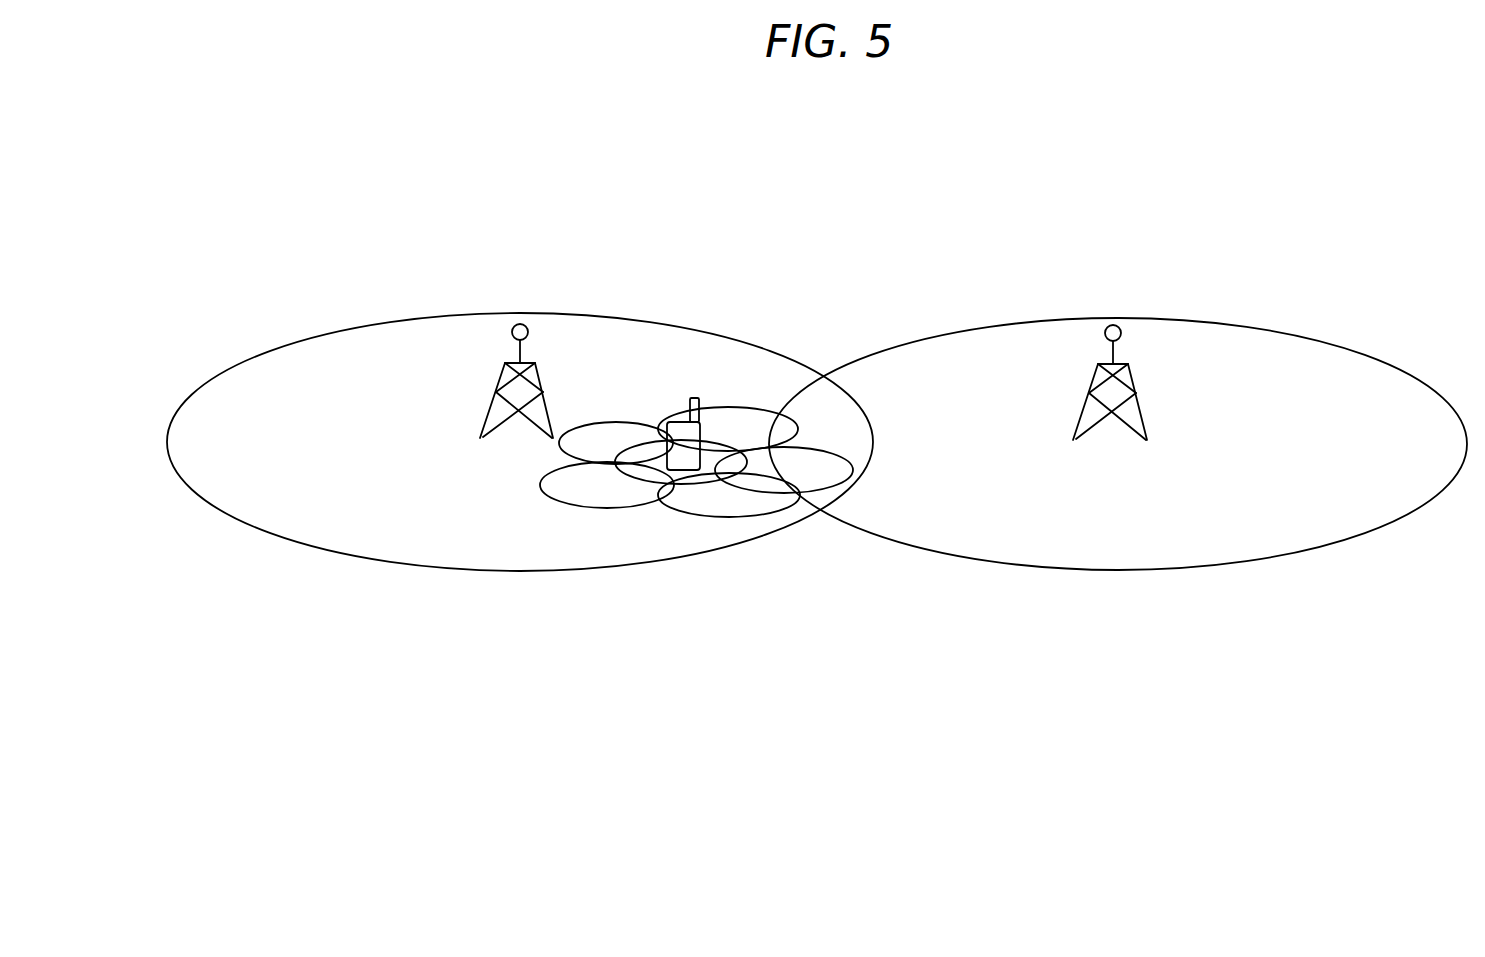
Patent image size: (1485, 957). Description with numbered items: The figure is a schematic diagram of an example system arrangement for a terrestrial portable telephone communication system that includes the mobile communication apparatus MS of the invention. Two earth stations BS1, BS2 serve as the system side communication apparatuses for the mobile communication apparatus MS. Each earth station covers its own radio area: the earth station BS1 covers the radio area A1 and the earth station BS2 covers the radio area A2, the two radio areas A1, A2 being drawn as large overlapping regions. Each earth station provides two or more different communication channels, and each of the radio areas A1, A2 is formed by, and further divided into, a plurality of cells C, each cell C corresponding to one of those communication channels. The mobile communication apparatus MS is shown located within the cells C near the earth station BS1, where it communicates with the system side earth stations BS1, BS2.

The radio area A1 is at (340, 330).
The radio area A2 is at (935, 333).
The earth station BS1 is at (543, 367).
The earth station BS2 is at (1135, 367).
The mobile communication apparatus MS is at (677, 433).
The cell C is at (617, 423).